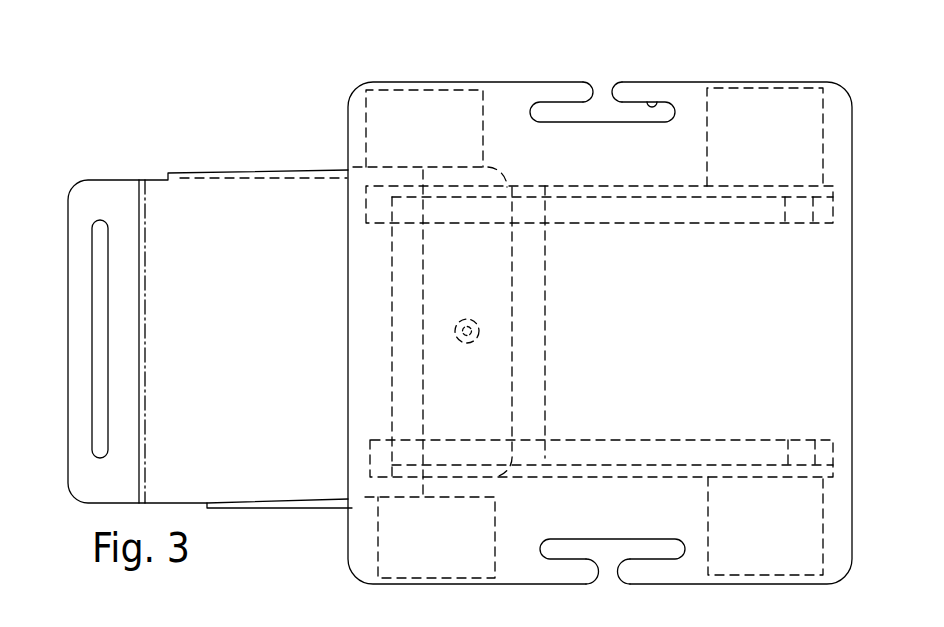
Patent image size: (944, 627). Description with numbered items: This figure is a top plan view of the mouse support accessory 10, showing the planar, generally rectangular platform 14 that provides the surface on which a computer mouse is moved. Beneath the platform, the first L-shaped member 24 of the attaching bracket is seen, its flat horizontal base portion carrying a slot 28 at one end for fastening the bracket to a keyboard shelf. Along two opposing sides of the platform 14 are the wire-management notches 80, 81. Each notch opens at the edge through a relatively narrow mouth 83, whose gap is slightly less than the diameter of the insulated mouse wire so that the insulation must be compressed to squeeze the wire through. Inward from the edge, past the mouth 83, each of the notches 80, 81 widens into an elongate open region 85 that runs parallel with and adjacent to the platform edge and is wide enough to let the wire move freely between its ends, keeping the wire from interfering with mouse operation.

The mouse support accessory 10 is at (285, 137).
The platform 14 is at (853, 250).
The first L-shaped member 24 is at (296, 509).
The slot 28 is at (97, 455).
The notch 80 is at (568, 553).
The notch 81 is at (655, 107).
The mouth 83 is at (615, 90).
The elongate open region 85 is at (552, 113).